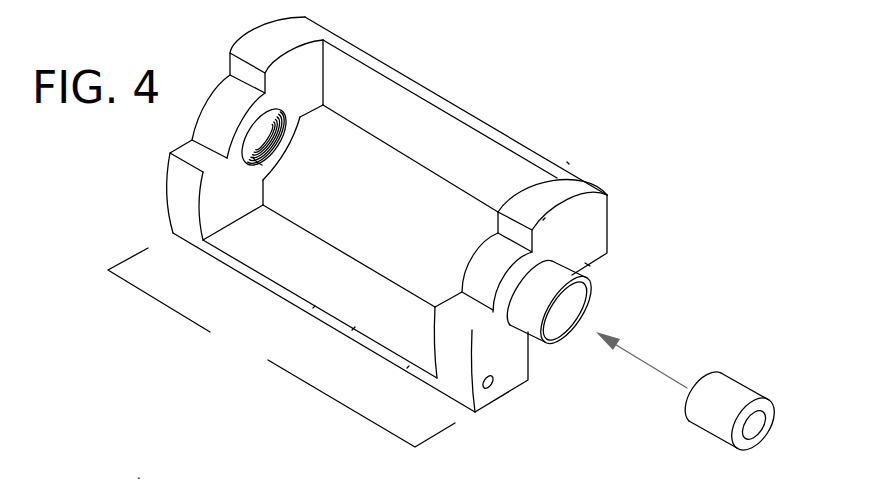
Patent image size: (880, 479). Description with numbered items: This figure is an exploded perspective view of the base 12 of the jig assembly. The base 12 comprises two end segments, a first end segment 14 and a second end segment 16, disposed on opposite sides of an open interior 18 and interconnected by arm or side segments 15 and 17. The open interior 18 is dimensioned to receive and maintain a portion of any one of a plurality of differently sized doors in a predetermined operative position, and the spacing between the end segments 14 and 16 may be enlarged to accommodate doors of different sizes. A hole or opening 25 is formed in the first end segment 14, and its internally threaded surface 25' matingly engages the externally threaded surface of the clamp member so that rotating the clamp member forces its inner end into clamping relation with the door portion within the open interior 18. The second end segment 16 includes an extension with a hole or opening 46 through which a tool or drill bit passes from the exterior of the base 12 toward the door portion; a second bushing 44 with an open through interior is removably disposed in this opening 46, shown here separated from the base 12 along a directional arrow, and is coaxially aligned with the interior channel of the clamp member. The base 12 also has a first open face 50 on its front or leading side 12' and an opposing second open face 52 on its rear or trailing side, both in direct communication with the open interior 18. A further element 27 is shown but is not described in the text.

The base 12 is at (291, 313).
The front or leading side 12' is at (373, 422).
The first end segment 14 is at (267, 45).
The arm or side segment 15 is at (357, 55).
The second end segment 16 is at (578, 182).
The arm or side segment 17 is at (313, 308).
The open interior 18 is at (398, 210).
The hole or opening 25 is at (288, 137).
The internally threaded surface 25' is at (292, 188).
The mounting surface 27 is at (138, 478).
The second bushing 44 is at (724, 439).
The hole or opening 46 is at (560, 322).
The first open face 50 is at (352, 330).
The second open face 52 is at (455, 177).